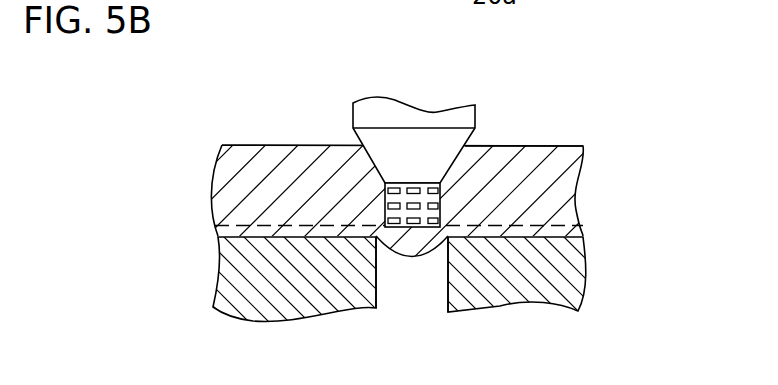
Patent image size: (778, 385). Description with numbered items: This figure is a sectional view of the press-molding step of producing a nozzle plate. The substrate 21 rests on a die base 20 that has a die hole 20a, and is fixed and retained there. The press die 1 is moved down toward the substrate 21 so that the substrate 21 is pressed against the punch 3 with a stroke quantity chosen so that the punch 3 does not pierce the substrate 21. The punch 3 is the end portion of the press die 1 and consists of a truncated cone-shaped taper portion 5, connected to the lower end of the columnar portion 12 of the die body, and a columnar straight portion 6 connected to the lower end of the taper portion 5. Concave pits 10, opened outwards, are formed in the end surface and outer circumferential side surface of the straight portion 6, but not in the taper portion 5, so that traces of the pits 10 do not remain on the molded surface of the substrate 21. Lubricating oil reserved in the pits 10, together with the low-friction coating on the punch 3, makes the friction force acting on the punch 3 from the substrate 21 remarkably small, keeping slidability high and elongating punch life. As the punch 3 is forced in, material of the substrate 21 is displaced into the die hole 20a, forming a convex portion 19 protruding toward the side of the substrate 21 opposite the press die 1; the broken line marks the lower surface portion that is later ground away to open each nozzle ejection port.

The press die 1 is at (497, 97).
The punch 3 is at (610, 97).
The taper portion 5 is at (457, 148).
The straight portion 6 is at (443, 190).
The pits 10 is at (412, 186).
The columnar portion 12 is at (375, 110).
The convex portion 19 is at (415, 248).
The die base 20 is at (572, 265).
The die hole 20a is at (448, 297).
The substrate 21 is at (573, 179).